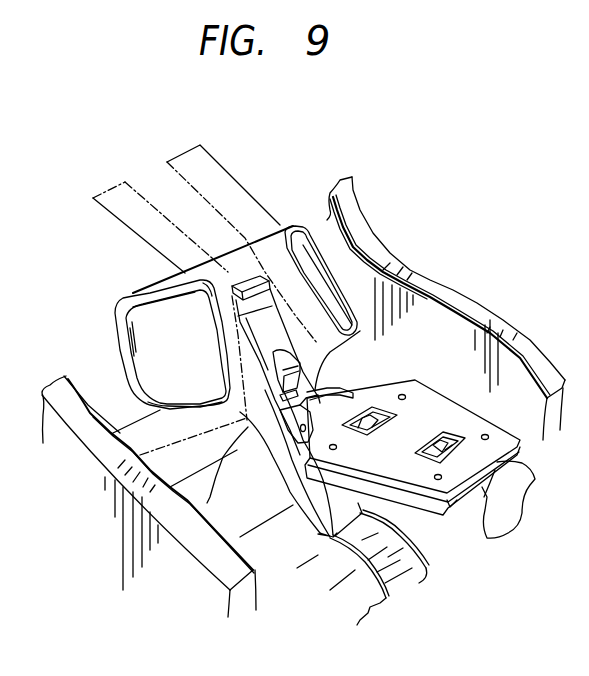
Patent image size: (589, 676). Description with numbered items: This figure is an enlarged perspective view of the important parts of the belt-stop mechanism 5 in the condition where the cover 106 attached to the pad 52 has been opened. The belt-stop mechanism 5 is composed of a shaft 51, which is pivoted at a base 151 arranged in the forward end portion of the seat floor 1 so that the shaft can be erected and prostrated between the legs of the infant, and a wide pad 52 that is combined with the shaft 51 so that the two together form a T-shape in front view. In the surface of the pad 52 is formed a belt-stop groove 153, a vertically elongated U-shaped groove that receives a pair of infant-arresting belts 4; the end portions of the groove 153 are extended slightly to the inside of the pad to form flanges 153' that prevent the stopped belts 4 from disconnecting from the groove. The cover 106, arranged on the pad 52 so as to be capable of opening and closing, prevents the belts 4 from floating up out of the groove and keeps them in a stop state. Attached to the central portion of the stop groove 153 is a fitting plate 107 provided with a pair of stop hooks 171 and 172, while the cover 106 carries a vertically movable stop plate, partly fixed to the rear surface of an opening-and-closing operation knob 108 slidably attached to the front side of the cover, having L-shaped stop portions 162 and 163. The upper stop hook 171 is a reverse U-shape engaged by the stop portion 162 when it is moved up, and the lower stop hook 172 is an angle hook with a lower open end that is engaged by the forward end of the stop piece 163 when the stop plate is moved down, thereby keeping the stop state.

The seat floor 1 is at (450, 295).
The infant-arresting belts 4 is at (125, 182).
The belt-stop mechanism 5 is at (108, 322).
The shaft 51 is at (287, 470).
The pad 52 is at (131, 381).
The cover 106 is at (534, 480).
The fitting plate 107 is at (245, 313).
The opening-and-closing operation knob 108 is at (430, 570).
The base 151 is at (407, 580).
The belt-stop groove 153 is at (177, 281).
The flanges 153' is at (322, 285).
The stop portion 162 is at (457, 430).
The stop piece 163 is at (370, 405).
The upper stop hook 171 is at (253, 275).
The lower stop hook 172 is at (260, 425).